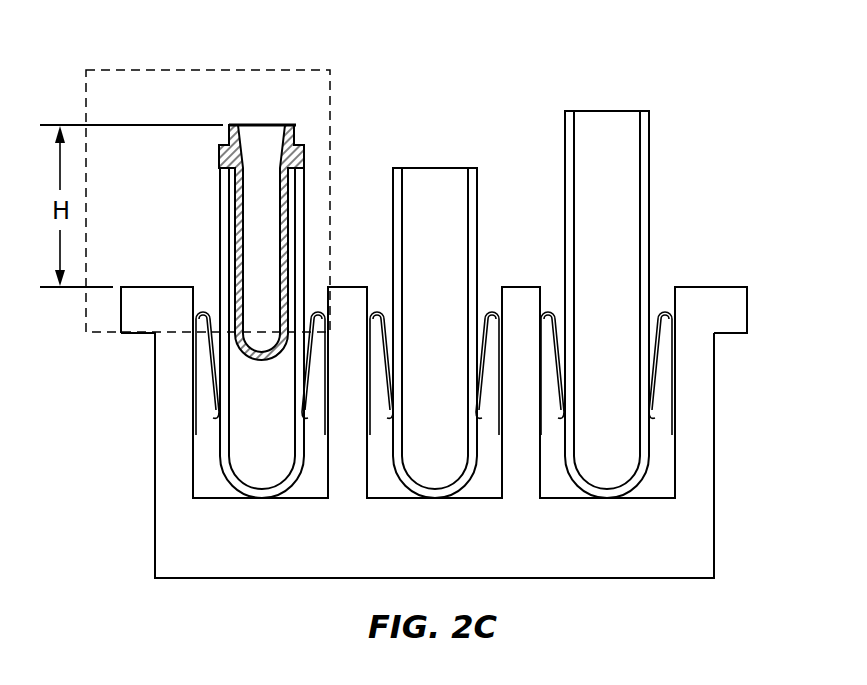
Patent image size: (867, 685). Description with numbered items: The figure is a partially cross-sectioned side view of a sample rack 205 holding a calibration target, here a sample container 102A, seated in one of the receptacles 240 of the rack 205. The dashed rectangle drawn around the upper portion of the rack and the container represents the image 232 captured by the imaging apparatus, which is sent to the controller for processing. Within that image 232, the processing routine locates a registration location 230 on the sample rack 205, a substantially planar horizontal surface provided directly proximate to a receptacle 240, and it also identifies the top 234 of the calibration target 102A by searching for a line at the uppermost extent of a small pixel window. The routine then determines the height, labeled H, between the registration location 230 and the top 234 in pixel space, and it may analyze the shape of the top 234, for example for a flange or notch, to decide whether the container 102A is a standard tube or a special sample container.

The sample rack 205 is at (155, 430).
The registration location 230 is at (165, 287).
The image 232 is at (164, 70).
The sample container 102A is at (258, 254).
The top of the calibration target 234 is at (250, 124).
The receptacle 240 is at (318, 282).